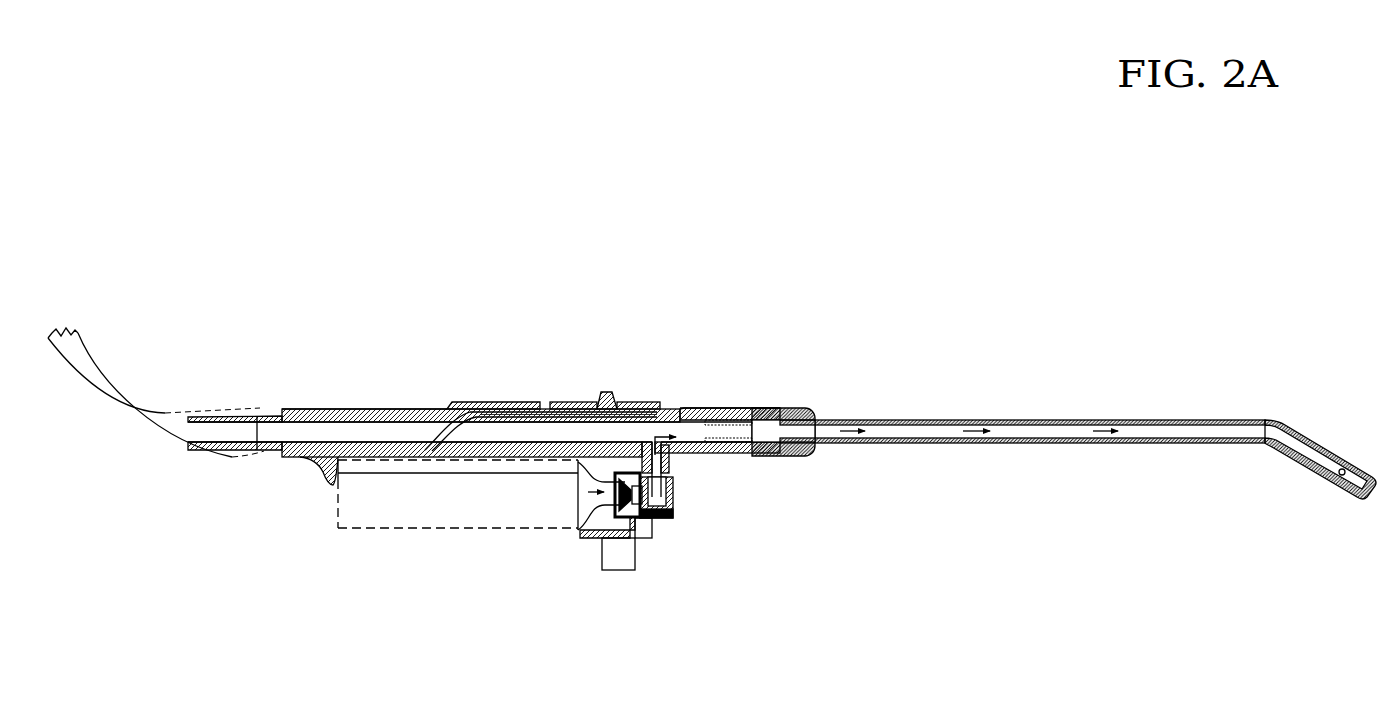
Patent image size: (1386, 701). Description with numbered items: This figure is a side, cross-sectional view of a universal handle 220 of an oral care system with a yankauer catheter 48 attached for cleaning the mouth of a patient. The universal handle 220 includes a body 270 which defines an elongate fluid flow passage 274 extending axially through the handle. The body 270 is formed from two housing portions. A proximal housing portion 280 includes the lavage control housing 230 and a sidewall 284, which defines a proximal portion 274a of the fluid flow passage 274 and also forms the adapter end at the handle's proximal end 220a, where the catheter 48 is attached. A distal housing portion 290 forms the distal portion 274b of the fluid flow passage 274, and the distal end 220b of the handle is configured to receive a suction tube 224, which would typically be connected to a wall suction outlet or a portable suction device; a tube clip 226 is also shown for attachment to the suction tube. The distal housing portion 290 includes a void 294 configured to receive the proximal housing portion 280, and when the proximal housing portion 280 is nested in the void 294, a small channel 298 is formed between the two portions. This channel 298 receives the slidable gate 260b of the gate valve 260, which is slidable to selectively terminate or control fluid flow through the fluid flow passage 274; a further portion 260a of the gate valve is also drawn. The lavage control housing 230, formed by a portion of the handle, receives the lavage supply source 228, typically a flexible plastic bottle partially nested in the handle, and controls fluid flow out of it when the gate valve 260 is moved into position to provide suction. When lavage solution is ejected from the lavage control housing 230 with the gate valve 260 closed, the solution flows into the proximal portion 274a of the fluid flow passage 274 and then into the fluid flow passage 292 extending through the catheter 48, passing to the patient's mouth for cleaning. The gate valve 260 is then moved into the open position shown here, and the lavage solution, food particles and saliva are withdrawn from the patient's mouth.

The yankauer catheter 48 is at (1120, 420).
The suction tube 224 is at (132, 398).
The universal handle 220 is at (423, 408).
The proximal end 220a is at (723, 417).
The distal end 220b is at (256, 416).
The tube clip 226 is at (633, 568).
The lavage supply source 228 is at (468, 523).
The lavage control housing 230 is at (670, 505).
The gate valve 260 is at (548, 412).
The projection 260a is at (607, 395).
The slidable gate 260b is at (503, 422).
The body 270 is at (447, 408).
The fluid flow passage 274 is at (357, 435).
The proximal portion of the fluid flow passage 274a is at (760, 435).
The distal portion of the fluid flow passage 274b is at (271, 442).
The proximal housing portion 280 is at (670, 412).
The sidewall 284 is at (743, 413).
The distal housing portion 290 is at (347, 411).
The fluid flow passage 292 is at (947, 438).
The void 294 is at (467, 412).
The channel 298 is at (427, 432).